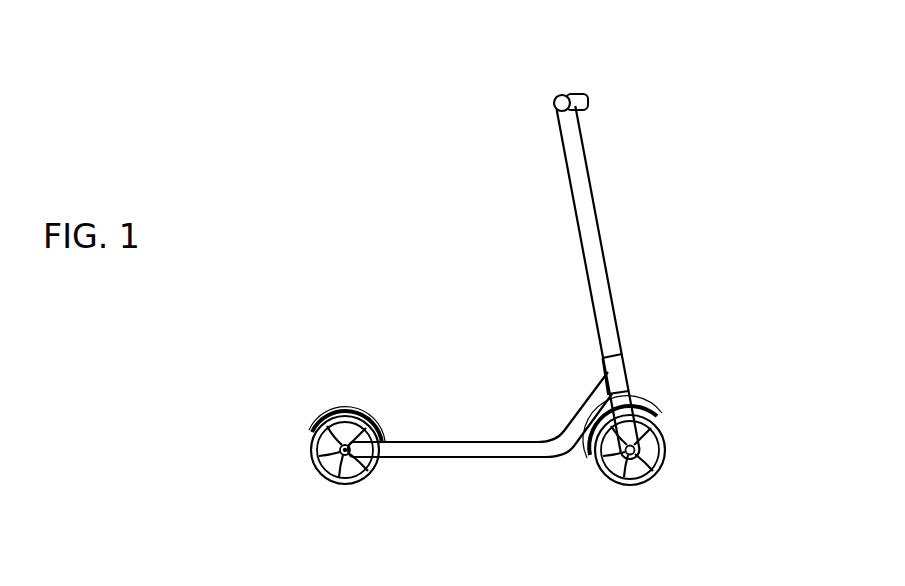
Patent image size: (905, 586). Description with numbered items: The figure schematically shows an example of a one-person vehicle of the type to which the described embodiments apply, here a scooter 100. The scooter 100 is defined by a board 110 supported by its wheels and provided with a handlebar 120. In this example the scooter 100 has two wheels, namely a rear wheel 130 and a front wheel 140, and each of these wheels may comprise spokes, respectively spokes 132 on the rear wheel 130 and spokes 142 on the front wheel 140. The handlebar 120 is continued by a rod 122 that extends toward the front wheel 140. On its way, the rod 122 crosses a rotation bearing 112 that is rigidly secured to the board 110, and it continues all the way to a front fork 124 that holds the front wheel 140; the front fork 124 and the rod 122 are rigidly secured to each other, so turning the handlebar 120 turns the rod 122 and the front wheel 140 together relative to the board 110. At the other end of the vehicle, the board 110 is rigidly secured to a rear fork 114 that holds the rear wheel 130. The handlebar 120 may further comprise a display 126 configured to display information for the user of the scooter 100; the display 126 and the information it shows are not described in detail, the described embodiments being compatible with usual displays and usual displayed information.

The scooter 100 is at (322, 187).
The board 110 is at (473, 443).
The rotation bearing 112 is at (616, 364).
The rear fork 114 is at (355, 468).
The handlebar 120 is at (555, 104).
The rod 122 is at (589, 230).
The front fork 124 is at (624, 400).
The display 126 is at (588, 95).
The rear wheel 130 is at (314, 452).
The spokes 132 is at (326, 461).
The front wheel 140 is at (665, 451).
The spokes 142 is at (618, 466).